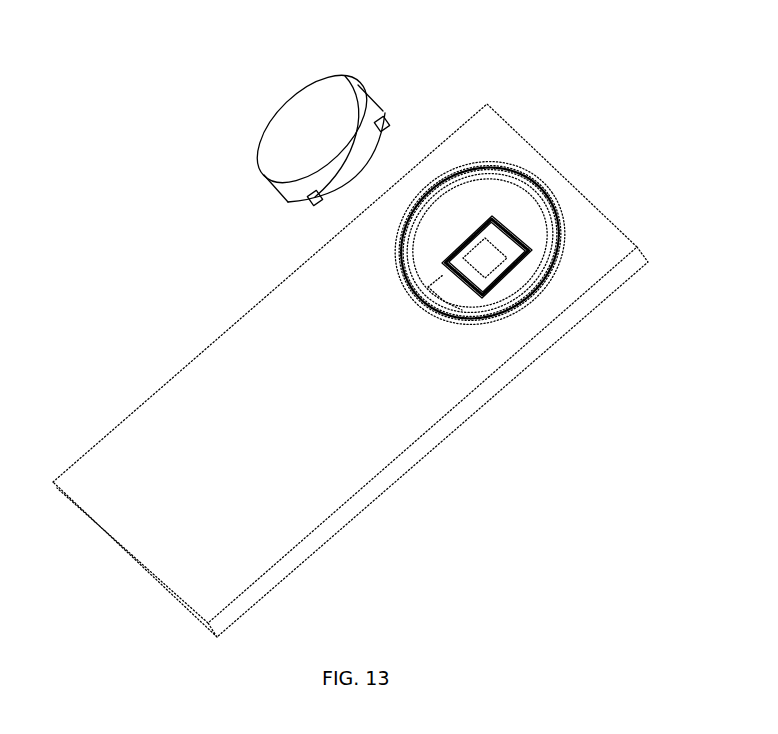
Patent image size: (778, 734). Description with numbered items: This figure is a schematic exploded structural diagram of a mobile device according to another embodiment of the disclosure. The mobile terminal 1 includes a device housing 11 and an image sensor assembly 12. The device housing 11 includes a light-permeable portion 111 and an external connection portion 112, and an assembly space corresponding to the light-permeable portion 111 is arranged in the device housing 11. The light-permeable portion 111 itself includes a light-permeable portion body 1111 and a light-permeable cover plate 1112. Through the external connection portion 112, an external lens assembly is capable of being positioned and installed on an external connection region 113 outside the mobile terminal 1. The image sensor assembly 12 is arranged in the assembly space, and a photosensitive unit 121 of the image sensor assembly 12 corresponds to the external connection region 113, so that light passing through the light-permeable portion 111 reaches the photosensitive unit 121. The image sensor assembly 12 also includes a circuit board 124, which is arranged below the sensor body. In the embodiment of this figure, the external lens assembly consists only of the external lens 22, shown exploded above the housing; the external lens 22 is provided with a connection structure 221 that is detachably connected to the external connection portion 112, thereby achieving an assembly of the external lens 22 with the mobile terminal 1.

The mobile terminal 1 is at (117, 116).
The device housing 11 is at (235, 398).
The light-permeable portion 111 is at (162, 222).
The light-permeable portion body 1111 is at (452, 230).
The light-permeable cover plate 1112 is at (397, 240).
The external connection portion 112 is at (460, 310).
The external connection region 113 is at (515, 205).
The image sensor assembly 12 is at (492, 216).
The photosensitive unit 121 is at (413, 262).
The circuit board 124 is at (477, 257).
The external lens 22 is at (318, 133).
The connection structure 221 is at (316, 192).